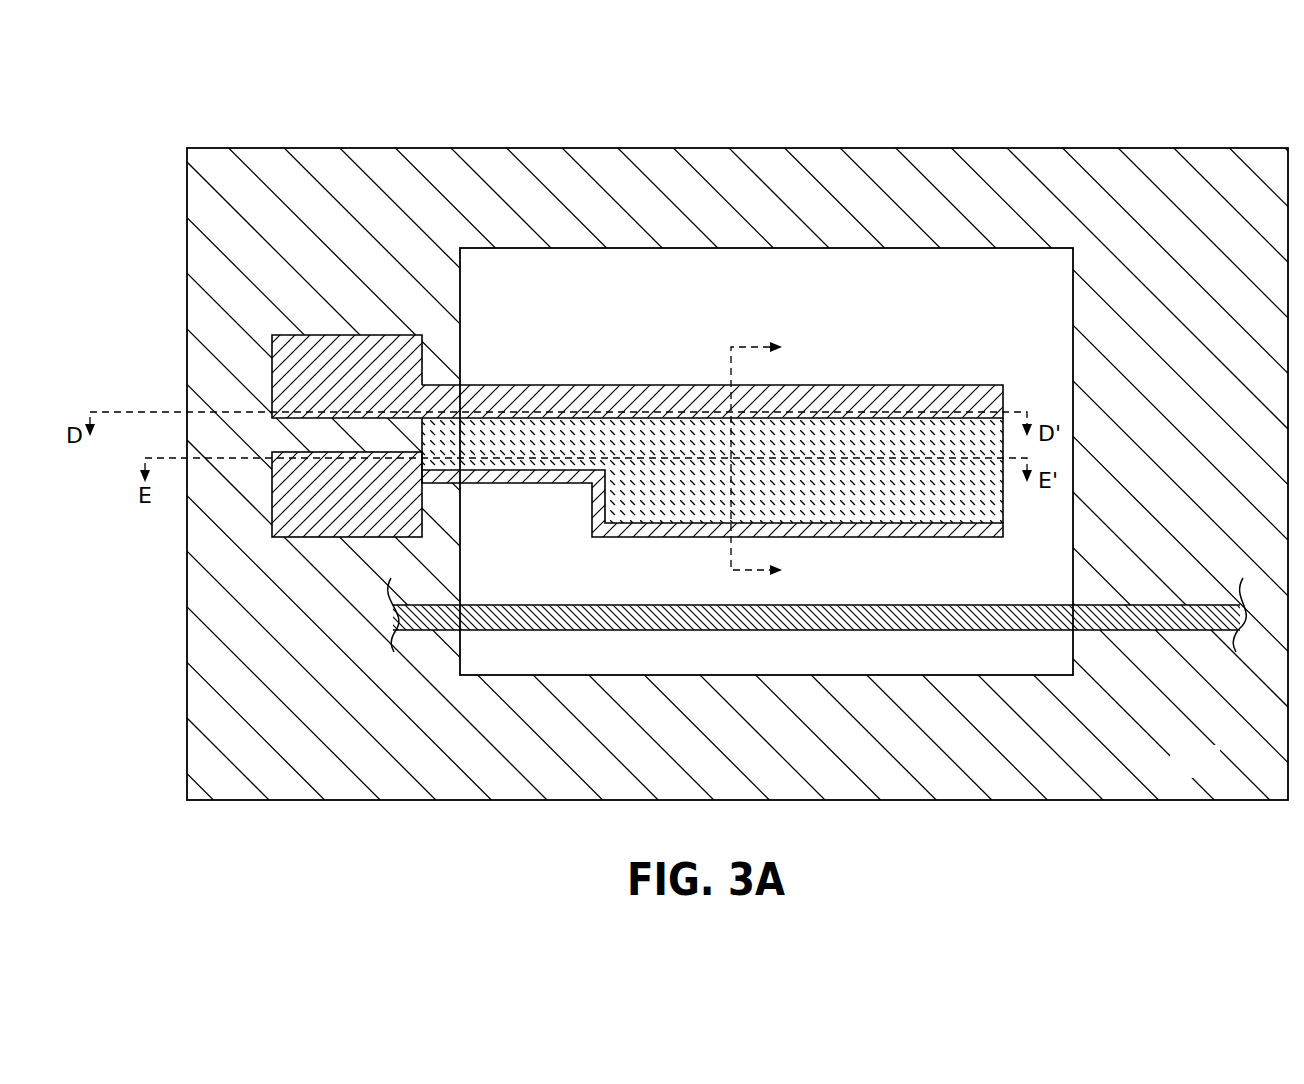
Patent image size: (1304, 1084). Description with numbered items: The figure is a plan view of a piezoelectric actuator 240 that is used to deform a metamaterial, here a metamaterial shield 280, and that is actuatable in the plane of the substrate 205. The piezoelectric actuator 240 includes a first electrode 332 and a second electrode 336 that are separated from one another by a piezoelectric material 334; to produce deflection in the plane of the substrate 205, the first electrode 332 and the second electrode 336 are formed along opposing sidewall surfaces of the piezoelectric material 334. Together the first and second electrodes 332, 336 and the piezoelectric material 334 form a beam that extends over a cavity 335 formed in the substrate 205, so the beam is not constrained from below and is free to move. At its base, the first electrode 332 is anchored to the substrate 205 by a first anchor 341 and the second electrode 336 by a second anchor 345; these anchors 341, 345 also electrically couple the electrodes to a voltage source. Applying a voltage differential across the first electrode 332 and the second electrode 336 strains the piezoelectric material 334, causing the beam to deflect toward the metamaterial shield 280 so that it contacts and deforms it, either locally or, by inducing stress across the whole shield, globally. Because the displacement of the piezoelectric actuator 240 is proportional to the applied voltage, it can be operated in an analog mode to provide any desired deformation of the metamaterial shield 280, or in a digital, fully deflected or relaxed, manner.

The substrate 205 is at (1213, 773).
The piezoelectric actuator 240 is at (852, 353).
The metamaterial shield 280 is at (1157, 617).
The first electrode 332 is at (556, 483).
The piezoelectric material 334 is at (940, 512).
The cavity 335 is at (1020, 343).
The second electrode 336 is at (557, 403).
The first anchor 341 is at (359, 512).
The second anchor 345 is at (359, 386).